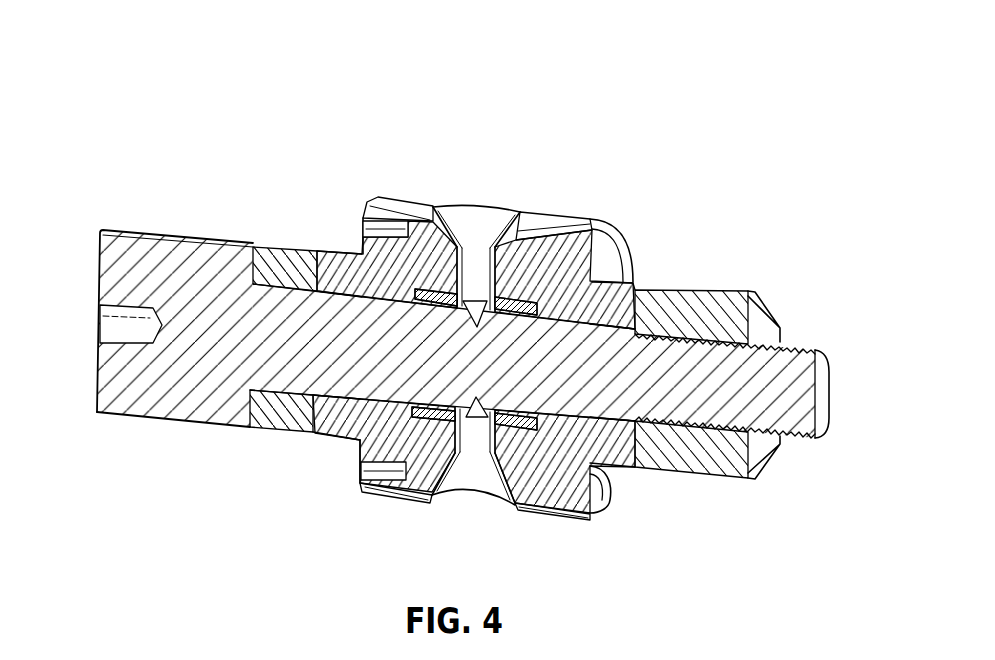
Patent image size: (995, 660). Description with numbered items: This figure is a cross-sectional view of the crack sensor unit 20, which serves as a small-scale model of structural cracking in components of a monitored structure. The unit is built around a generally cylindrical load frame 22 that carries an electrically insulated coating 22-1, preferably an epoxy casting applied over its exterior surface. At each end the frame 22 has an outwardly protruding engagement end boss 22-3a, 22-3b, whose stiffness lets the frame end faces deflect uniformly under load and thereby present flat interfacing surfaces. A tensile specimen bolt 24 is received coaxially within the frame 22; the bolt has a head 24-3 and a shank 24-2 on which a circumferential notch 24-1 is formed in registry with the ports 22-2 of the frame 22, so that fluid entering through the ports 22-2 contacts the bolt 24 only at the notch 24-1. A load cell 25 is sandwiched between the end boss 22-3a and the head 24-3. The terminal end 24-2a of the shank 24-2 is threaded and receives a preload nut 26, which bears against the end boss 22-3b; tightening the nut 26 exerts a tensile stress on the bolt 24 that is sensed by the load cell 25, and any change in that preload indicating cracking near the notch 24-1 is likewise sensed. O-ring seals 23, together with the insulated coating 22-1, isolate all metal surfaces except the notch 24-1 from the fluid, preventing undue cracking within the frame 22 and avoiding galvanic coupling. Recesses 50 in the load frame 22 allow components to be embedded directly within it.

The crack sensor unit 20 is at (169, 140).
The load frame 22 is at (604, 258).
The insulated coating 22-1 is at (410, 217).
The ports 22-2 is at (474, 267).
The engagement end boss 22-3a is at (318, 434).
The engagement end boss 22-3b is at (634, 284).
The O-ring seals 23 is at (432, 310).
The tensile specimen bolt 24 is at (177, 420).
The circumferential notch 24-1 is at (480, 305).
The shank 24-2 is at (363, 357).
The terminal end 24-2a is at (803, 360).
The head 24-3 is at (157, 262).
The load cell 25 is at (285, 258).
The preload nut 26 is at (690, 468).
The recesses 50 is at (365, 230).